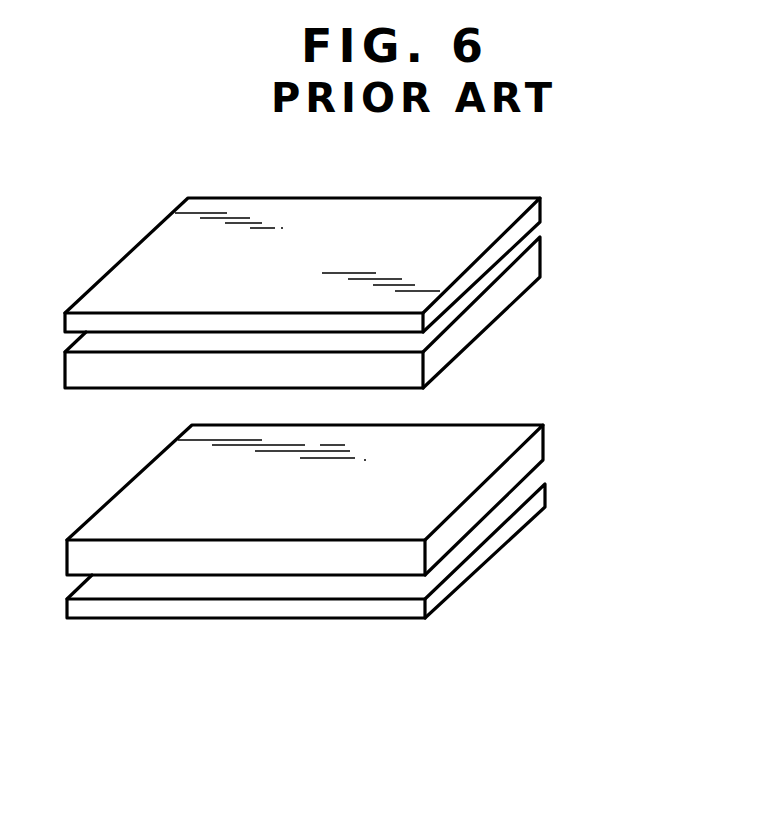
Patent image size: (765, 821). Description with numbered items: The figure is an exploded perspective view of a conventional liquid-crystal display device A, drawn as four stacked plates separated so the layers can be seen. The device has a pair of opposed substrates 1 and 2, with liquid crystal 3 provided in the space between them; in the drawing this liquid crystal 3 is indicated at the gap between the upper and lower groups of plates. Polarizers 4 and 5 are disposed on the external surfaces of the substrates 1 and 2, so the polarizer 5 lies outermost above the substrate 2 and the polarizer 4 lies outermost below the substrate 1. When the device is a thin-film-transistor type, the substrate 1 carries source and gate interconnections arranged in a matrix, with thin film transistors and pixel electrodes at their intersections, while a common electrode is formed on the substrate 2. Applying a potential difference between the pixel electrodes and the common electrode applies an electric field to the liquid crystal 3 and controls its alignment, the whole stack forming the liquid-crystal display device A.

The polarizer 5 is at (532, 211).
The substrate 2 is at (532, 260).
The liquid crystal 3 is at (513, 348).
The substrate 1 is at (535, 444).
The polarizer 4 is at (543, 496).
The liquid-crystal display device A is at (600, 173).